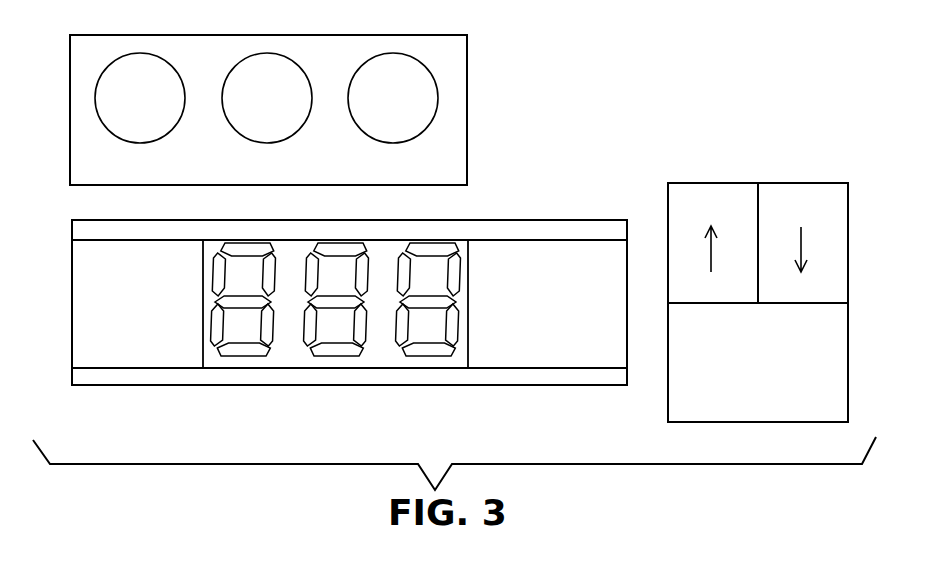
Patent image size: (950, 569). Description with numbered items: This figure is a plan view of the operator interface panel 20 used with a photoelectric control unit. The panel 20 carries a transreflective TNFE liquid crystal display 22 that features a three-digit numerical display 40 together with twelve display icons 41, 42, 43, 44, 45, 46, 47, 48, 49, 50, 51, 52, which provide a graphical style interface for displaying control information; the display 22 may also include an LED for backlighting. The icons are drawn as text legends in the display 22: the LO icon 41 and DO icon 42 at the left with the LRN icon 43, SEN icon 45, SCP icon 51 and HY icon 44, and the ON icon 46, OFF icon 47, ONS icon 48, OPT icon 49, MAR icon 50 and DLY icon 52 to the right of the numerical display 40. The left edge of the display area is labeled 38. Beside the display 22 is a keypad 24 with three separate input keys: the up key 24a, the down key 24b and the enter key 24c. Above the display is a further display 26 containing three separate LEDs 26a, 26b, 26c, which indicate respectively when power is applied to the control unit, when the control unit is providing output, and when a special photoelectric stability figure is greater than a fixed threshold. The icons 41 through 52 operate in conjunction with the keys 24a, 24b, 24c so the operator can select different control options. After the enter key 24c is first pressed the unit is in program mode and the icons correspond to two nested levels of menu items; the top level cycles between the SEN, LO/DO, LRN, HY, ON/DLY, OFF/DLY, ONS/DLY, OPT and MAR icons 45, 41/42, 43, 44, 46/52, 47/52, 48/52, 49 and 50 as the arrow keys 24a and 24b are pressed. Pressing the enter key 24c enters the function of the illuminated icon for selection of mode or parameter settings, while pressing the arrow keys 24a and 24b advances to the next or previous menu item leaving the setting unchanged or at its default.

The operator interface panel 20 is at (147, 392).
The transreflective TNFE liquid crystal display 22 is at (521, 218).
The keypad 24 is at (852, 210).
The up key 24a is at (690, 183).
The down key 24b is at (787, 183).
The enter key 24c is at (720, 423).
The display 26 is at (467, 62).
The LED 26a is at (119, 109).
The LED 26b is at (246, 109).
The LED 26c is at (372, 109).
The display legend area 38 is at (72, 323).
The three-digit numerical display 40 is at (332, 368).
The LO icon 41 is at (85, 268).
The DO icon 42 is at (84, 305).
The LRN icon 43 is at (162, 253).
The HY icon 44 is at (180, 344).
The SEN icon 45 is at (143, 316).
The ON icon 46 is at (498, 254).
The OFF icon 47 is at (533, 313).
The ONS icon 48 is at (515, 351).
The OPT icon 49 is at (580, 347).
The MAR icon 50 is at (556, 301).
The display icon 51 is at (88, 339).
The DLY icon 52 is at (594, 257).